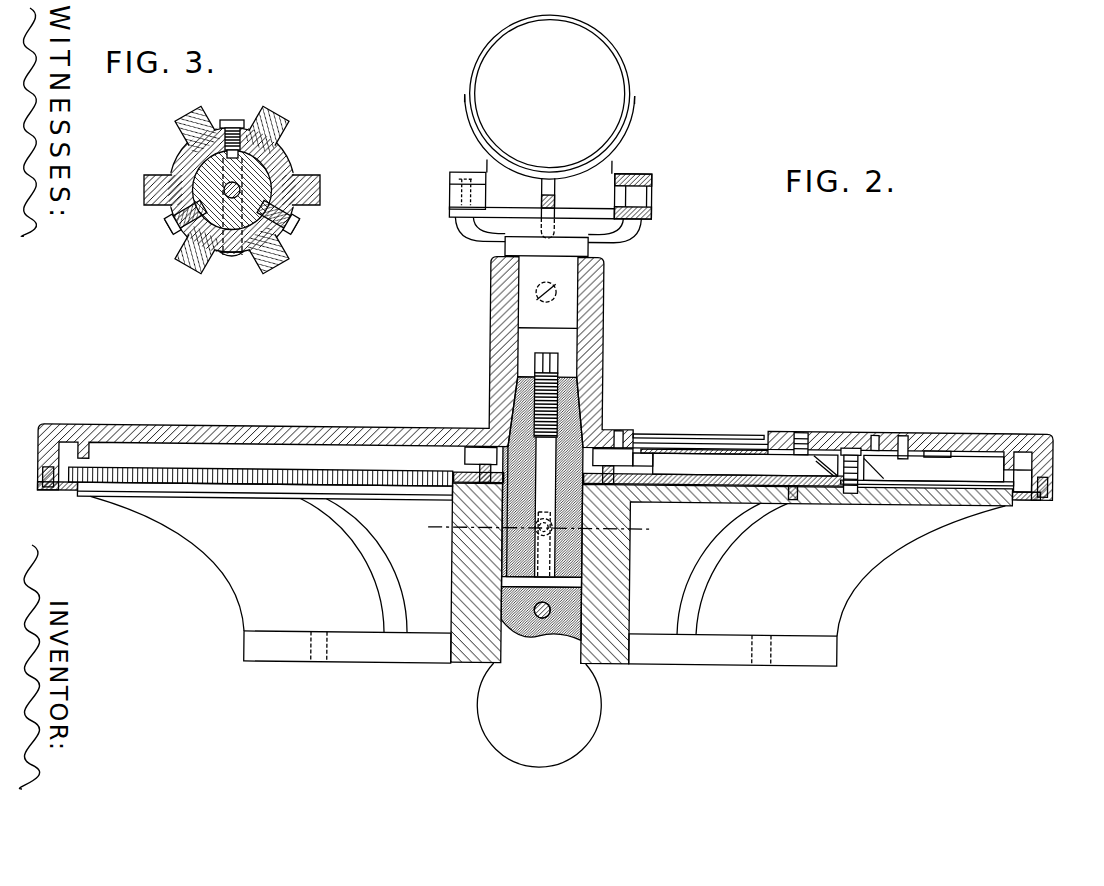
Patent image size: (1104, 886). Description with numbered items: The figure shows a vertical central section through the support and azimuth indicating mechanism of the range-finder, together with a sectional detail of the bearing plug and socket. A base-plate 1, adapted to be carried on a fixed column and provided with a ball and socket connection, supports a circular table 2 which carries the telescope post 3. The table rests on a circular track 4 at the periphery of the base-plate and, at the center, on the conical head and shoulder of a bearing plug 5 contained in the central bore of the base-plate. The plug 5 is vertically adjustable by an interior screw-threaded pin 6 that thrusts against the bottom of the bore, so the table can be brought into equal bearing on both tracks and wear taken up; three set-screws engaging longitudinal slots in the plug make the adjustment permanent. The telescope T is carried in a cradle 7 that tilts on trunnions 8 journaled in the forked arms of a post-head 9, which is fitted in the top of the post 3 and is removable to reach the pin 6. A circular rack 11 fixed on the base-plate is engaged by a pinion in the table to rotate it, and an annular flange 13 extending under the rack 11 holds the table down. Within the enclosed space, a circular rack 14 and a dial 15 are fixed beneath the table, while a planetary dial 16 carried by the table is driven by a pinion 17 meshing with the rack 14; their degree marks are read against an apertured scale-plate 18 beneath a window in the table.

In FIG. 2, the telescope T is at (607, 63).
In FIG. 3, the base-plate 1 is at (265, 247).
In FIG. 2, the base-plate 1 is at (843, 571).
In FIG. 2, the circular table 2 is at (1040, 436).
In FIG. 2, the telescope post 3 is at (601, 319).
In FIG. 2, the circular track 4 is at (927, 475).
In FIG. 3, the bearing plug 5 is at (270, 183).
In FIG. 2, the bearing plug 5 is at (576, 402).
In FIG. 3, the screw-threaded pin 6 is at (224, 187).
In FIG. 2, the screw-threaded pin 6 is at (538, 360).
In FIG. 2, the cradle 7 is at (628, 127).
In FIG. 2, the trunnions 8 is at (648, 196).
In FIG. 2, the post-head 9 is at (625, 241).
In FIG. 2, the circular rack 11 is at (90, 488).
In FIG. 2, the annular flange 13 is at (55, 495).
In FIG. 2, the circular rack 14 is at (812, 478).
In FIG. 2, the dial 15 is at (715, 469).
In FIG. 2, the planetary dial 16 is at (937, 455).
In FIG. 2, the pinion 17 is at (860, 480).
In FIG. 2, the scale-plate 18 is at (650, 440).